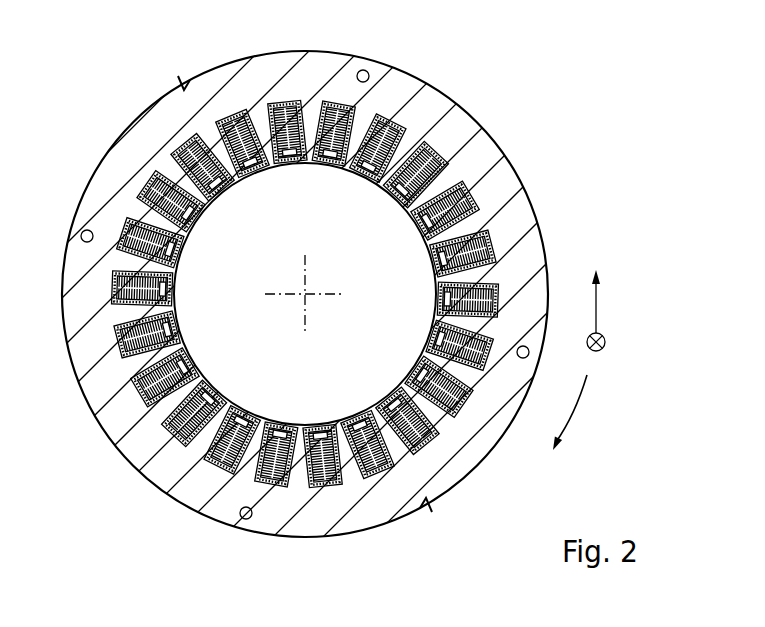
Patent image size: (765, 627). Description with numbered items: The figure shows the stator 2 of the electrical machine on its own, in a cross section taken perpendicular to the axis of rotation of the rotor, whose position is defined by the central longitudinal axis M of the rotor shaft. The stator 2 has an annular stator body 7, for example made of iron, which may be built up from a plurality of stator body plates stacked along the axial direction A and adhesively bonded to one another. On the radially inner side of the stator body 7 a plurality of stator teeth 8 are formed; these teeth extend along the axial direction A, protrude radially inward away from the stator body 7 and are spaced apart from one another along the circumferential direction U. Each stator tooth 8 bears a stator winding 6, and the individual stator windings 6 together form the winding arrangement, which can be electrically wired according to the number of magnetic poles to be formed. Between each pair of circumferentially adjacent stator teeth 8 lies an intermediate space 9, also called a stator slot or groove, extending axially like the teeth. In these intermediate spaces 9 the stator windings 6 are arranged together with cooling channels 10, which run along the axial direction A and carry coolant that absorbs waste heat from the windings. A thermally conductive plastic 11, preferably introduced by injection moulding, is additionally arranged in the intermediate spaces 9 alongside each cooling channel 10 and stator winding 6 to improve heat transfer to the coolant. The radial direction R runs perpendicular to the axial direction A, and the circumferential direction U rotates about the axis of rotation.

The stator 2 is at (382, 300).
The stator winding 6 is at (192, 143).
The stator body 7 is at (447, 110).
The stator tooth 8 is at (207, 204).
The intermediate space 9 is at (184, 146).
The cooling channel 10 is at (222, 192).
The thermally conductive plastic 11 is at (196, 136).
The central longitudinal axis M is at (305, 294).
The radial direction R is at (599, 306).
The axial direction A is at (607, 343).
The circumferential direction U is at (577, 407).